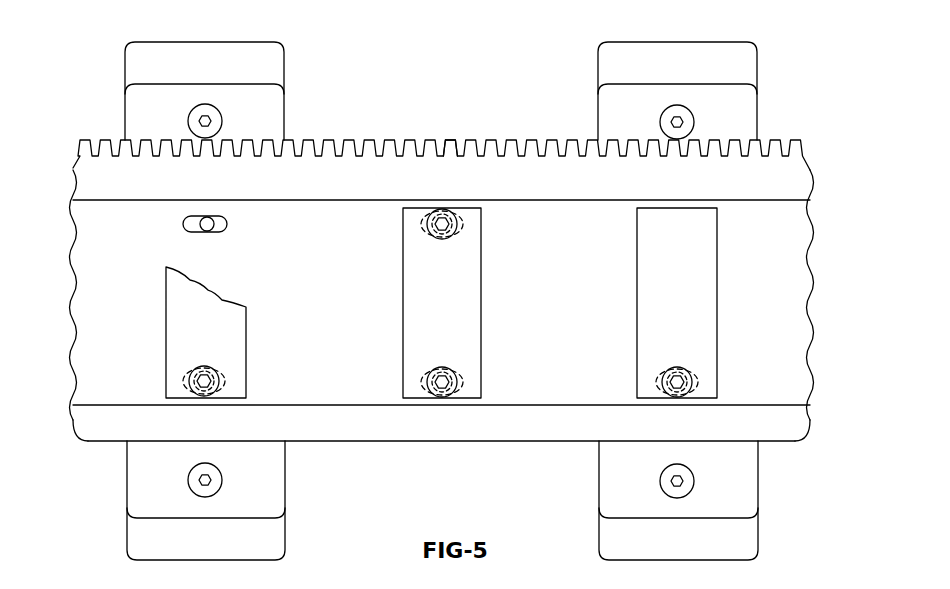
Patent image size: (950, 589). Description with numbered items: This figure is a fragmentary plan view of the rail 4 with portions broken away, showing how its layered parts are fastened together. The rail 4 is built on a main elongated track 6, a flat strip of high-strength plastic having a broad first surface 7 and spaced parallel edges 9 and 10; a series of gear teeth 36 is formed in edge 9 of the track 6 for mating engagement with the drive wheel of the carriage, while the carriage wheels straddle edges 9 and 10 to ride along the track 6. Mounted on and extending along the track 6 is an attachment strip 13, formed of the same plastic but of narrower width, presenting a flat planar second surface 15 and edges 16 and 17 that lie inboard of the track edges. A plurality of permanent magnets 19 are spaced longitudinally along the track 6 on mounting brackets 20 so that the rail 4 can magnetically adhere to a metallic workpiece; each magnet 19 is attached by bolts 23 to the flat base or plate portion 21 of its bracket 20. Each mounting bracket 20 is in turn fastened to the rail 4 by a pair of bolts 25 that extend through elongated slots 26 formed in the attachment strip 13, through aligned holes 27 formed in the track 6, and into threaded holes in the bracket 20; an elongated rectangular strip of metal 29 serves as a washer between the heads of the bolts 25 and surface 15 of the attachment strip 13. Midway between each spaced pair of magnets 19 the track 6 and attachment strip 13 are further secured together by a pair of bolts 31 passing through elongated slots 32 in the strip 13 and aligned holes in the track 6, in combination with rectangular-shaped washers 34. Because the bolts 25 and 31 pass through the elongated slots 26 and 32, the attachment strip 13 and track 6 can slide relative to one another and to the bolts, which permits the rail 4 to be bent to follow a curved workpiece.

The rail 4 is at (777, 243).
The main elongated track 6 is at (53, 380).
The first surface 7 is at (448, 425).
The edge 9 is at (362, 140).
The edge 10 is at (487, 443).
The attachment strip 13 is at (112, 240).
The second flat planar surface 15 is at (777, 283).
The edge 16 is at (107, 200).
The edge 17 is at (322, 405).
The permanent magnet 19 is at (267, 60).
The mounting bracket 20 is at (138, 472).
The flat base portion 21 is at (143, 110).
The bolt 23 is at (217, 118).
The bolt 25 is at (200, 368).
The elongated slot 26 is at (213, 228).
The aligned hole 27 is at (200, 228).
The elongated rectangular strip of metal 29 is at (192, 310).
The bolt 31 is at (438, 238).
The elongated slot 32 is at (422, 378).
The rectangular-shaped washer 34 is at (418, 310).
The gear teeth 36 is at (455, 146).